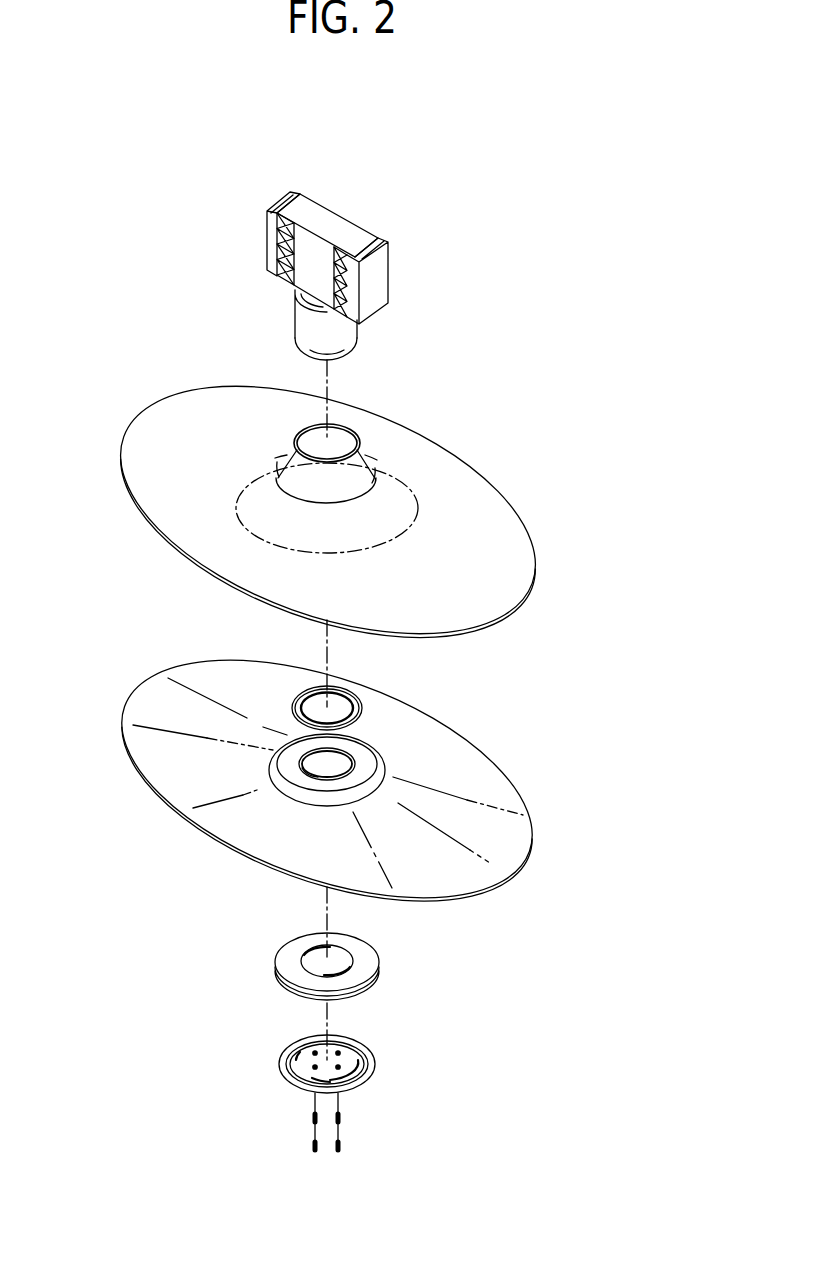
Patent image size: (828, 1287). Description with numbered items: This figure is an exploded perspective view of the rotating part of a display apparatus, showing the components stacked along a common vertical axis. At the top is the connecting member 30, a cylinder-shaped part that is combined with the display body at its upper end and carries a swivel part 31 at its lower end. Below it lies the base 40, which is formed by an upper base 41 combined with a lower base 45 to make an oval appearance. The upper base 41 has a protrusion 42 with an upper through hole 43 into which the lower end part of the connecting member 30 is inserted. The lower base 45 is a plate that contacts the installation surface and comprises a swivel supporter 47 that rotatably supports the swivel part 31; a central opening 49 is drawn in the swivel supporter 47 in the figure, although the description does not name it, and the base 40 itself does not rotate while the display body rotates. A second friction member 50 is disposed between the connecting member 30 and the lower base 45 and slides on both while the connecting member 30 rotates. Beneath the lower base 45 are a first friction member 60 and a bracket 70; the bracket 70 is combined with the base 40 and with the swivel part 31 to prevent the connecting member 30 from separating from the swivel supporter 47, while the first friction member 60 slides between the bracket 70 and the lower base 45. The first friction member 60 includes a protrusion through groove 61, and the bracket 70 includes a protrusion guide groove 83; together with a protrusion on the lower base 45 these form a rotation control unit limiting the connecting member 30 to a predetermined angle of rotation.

The connecting member 30 is at (350, 333).
The swivel part 31 is at (350, 356).
The base 40 is at (366, 641).
The upper base 41 is at (508, 537).
The protrusion 42 is at (358, 477).
The upper through hole 43 is at (340, 438).
The lower base 45 is at (515, 790).
The swivel supporter 47 is at (372, 758).
The through hole 49 is at (318, 775).
The second friction member 50 is at (298, 702).
The first friction member 60 is at (283, 960).
The protrusion through groove 61 is at (350, 970).
The bracket 70 is at (281, 1072).
The protrusion guide groove 83 is at (360, 1067).